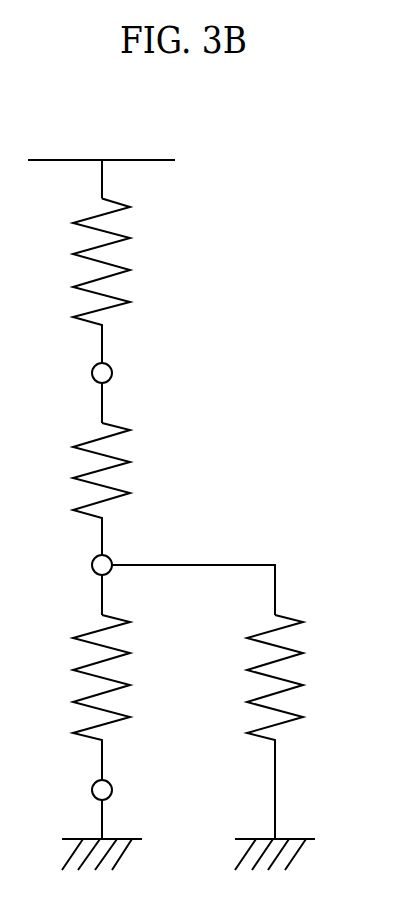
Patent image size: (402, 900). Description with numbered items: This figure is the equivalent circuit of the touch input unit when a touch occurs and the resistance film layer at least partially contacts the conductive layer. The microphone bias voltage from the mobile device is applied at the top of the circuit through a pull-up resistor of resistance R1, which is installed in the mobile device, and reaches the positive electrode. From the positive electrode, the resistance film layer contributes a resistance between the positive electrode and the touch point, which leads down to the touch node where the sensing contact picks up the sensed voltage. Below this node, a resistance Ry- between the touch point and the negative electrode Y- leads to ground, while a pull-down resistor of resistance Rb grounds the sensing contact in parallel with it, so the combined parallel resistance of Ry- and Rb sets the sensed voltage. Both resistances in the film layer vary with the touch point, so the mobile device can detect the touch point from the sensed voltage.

The pull-up resistor resistance R1 is at (121, 281).
The resistance between negative electrode and touch point Ry- is at (128, 697).
The pull-down resistor resistance Rb is at (297, 727).
The negative electrode Y- is at (133, 801).